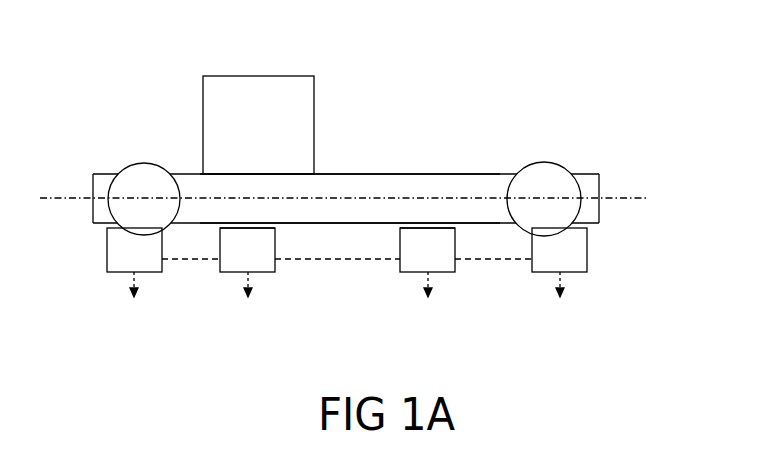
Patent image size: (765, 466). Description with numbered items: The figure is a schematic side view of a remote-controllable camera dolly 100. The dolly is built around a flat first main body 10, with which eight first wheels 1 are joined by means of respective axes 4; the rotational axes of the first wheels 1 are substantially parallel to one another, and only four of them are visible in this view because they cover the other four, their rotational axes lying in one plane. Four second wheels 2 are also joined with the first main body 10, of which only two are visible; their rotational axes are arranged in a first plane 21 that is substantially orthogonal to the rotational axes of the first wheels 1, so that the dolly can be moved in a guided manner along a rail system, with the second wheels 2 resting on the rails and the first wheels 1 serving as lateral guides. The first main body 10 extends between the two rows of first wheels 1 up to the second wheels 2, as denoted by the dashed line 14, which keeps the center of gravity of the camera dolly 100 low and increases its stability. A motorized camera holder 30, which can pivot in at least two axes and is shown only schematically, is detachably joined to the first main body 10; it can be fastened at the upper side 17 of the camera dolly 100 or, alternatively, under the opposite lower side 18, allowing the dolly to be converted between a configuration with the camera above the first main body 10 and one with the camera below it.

The remote-controllable camera dolly 100 is at (348, 30).
The first wheels 1 is at (153, 262).
The second wheels 2 is at (152, 188).
The axes 4 is at (246, 228).
The first main body 10 is at (463, 187).
The dashed line 14 is at (500, 259).
The upper side 17 is at (352, 172).
The lower side 18 is at (332, 232).
The first plane 21 is at (53, 198).
The motorized camera holder 30 is at (272, 126).